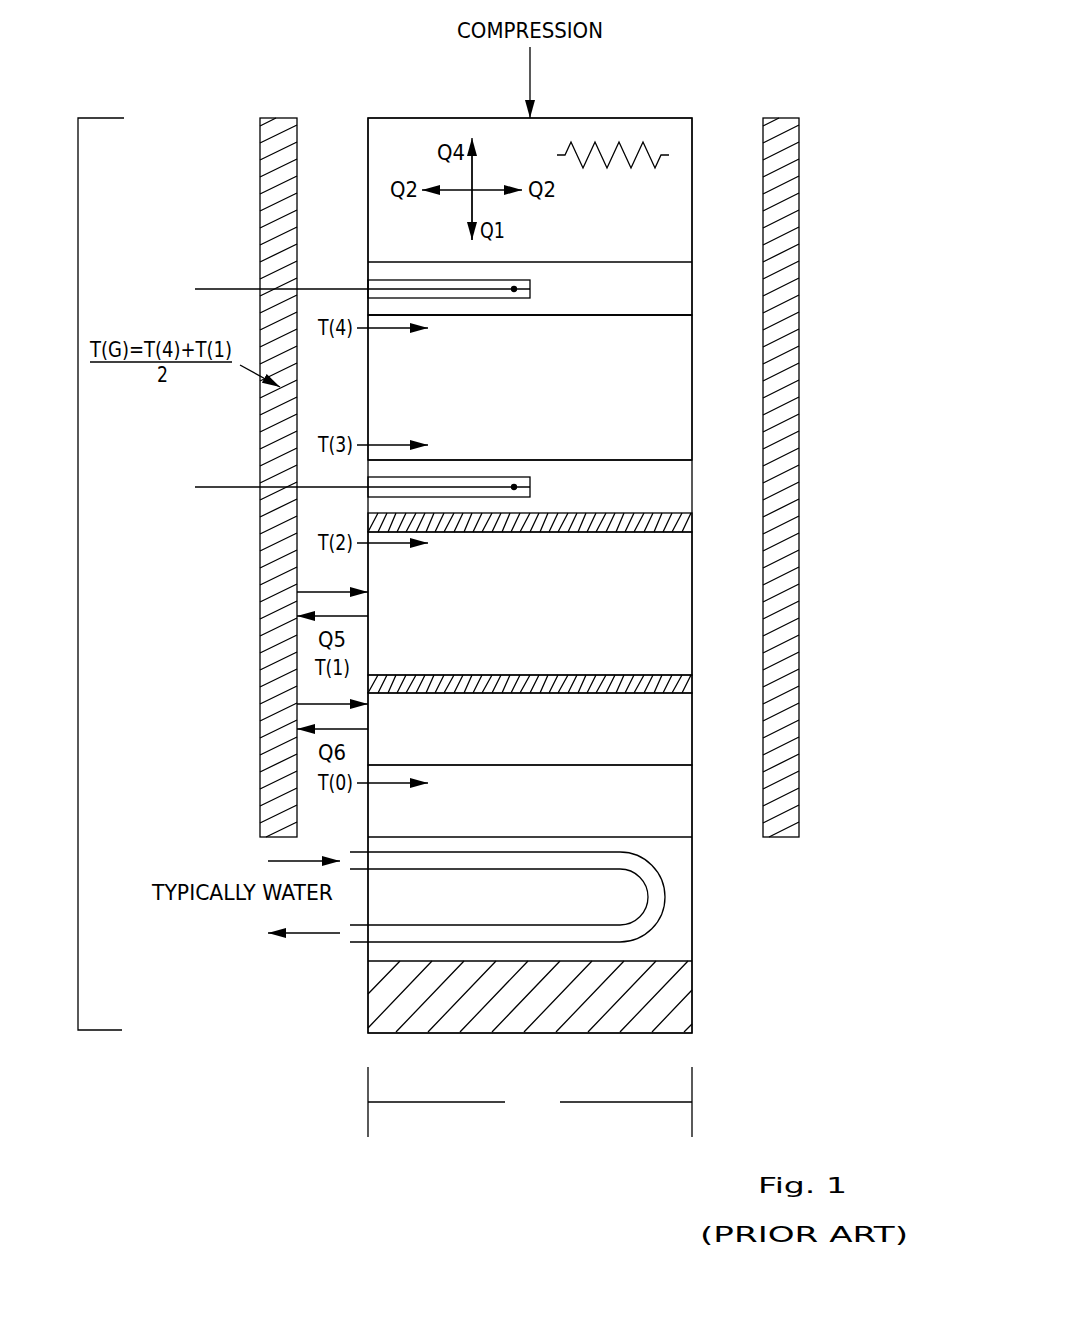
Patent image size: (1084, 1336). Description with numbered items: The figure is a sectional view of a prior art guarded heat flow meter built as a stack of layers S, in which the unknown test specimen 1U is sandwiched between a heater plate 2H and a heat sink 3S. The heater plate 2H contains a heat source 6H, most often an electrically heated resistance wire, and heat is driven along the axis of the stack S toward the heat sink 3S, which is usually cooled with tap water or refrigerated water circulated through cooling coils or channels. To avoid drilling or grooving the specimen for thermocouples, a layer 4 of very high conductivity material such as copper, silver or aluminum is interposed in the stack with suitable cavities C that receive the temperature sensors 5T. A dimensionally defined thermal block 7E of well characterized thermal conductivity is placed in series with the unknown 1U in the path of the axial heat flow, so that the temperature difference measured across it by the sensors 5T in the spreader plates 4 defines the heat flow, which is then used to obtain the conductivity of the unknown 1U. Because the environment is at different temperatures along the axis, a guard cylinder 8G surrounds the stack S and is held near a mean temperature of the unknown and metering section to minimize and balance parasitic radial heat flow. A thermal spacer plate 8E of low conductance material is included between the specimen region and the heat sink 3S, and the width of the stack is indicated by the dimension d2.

The heater plate 2H is at (683, 297).
The heat source 6H is at (640, 143).
The cavity C is at (530, 289).
The temperature sensor 5T is at (220, 486).
The heat spreader plate 4 is at (687, 308).
The thermal block (metering) 7E is at (658, 388).
The unknown test specimen 1U is at (665, 610).
The thermal spacer plate 8E is at (658, 732).
The heat sink 3S is at (660, 877).
The guard cylinder 8G is at (783, 190).
The stack of layers S is at (78, 578).
The stack width dimension d2 is at (530, 1102).